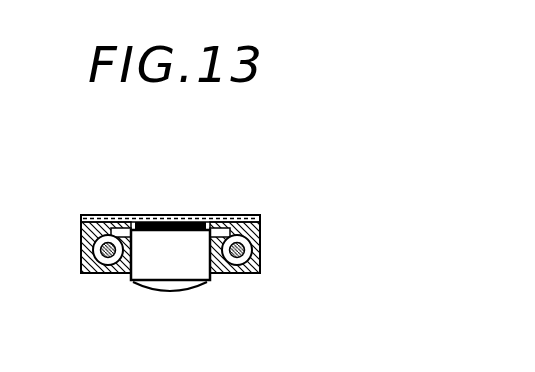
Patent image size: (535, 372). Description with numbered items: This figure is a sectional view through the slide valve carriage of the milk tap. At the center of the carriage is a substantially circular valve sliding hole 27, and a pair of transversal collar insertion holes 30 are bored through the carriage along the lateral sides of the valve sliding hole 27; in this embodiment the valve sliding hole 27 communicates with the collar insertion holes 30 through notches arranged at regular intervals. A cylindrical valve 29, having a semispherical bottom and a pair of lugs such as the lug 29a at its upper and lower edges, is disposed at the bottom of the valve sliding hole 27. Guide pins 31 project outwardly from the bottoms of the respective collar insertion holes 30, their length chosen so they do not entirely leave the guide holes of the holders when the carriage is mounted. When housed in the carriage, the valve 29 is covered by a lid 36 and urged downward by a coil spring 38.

The valve sliding hole 27 is at (205, 216).
The cylindrical valve 29 is at (178, 262).
The lug 29a is at (118, 215).
The collar insertion hole 30 is at (90, 273).
The guide pin 31 is at (113, 273).
The lid 36 is at (193, 217).
The coil spring 38 is at (140, 216).